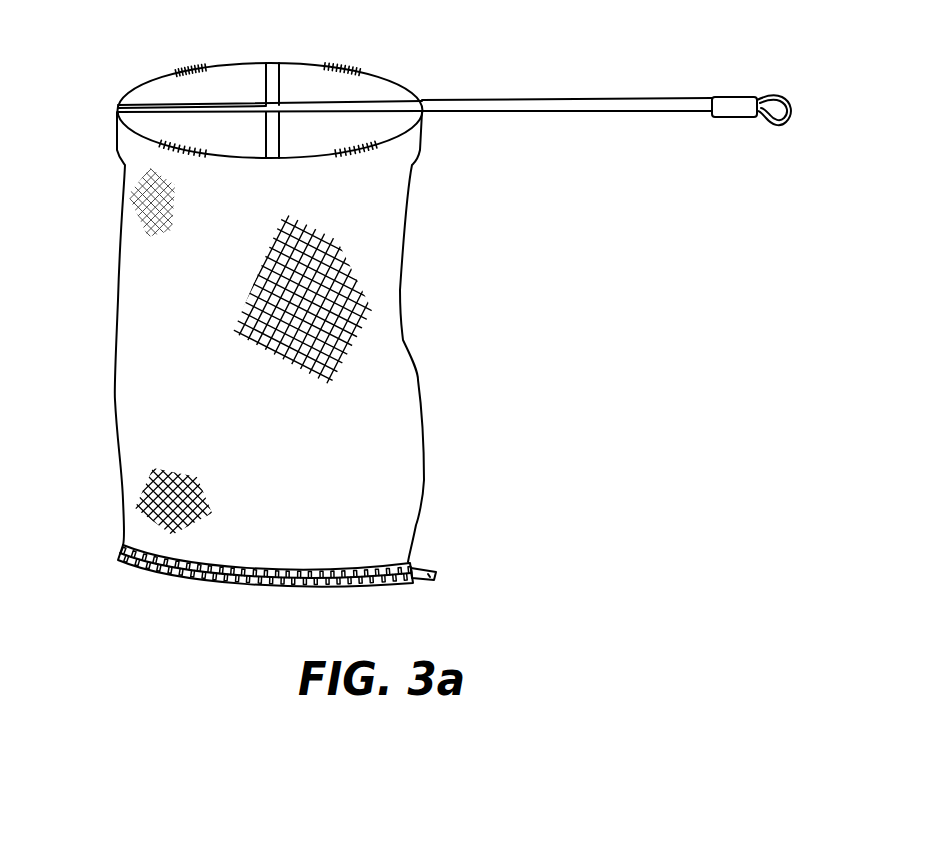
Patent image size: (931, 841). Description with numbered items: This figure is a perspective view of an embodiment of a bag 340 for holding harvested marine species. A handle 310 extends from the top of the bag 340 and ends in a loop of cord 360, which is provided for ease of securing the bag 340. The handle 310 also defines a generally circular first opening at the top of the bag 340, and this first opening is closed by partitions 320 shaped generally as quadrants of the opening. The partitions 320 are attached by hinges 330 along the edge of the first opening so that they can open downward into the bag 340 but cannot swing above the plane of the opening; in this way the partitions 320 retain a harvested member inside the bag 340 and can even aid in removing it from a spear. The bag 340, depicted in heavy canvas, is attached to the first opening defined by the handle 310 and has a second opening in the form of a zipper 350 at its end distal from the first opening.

The handle 310 is at (627, 106).
The partitions 320 is at (143, 93).
The hinges 330 is at (193, 67).
The bag 340 is at (395, 433).
The zipper 350 is at (348, 566).
The loop of cord 360 is at (774, 94).